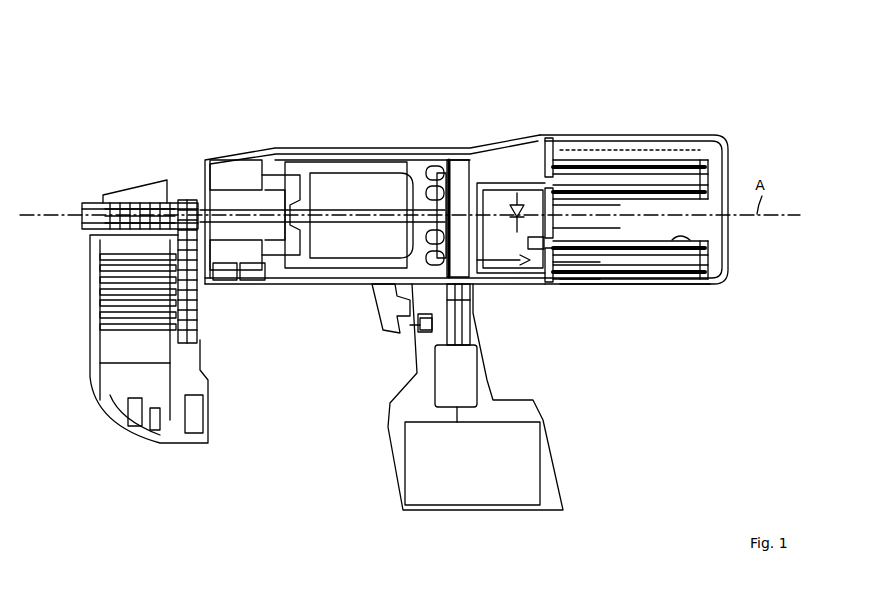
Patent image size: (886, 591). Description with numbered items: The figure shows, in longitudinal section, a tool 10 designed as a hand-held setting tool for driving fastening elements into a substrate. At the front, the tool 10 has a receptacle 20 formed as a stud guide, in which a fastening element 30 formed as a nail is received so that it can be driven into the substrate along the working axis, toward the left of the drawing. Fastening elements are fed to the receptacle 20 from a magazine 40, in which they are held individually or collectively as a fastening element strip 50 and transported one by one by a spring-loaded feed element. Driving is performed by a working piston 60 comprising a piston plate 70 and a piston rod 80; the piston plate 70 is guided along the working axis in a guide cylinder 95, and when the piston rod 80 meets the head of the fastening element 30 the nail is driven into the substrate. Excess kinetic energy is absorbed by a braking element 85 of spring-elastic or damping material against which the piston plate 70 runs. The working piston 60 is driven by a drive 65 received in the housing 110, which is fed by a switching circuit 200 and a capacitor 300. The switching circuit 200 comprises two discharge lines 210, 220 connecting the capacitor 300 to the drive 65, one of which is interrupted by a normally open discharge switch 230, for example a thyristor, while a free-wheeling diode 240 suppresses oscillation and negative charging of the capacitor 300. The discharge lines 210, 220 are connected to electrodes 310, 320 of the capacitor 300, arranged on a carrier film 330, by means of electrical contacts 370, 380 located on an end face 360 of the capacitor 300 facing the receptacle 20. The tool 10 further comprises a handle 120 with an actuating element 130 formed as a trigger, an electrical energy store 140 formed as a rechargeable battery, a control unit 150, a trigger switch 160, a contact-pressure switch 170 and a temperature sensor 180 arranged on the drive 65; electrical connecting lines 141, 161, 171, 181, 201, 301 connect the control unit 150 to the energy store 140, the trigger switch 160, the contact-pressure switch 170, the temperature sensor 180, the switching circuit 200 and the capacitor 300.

The tool 10 is at (94, 61).
The receptacle 20 is at (86, 160).
The fastening element 30 is at (128, 160).
The magazine 40 is at (140, 347).
The fastening element strip 50 is at (185, 333).
The working piston 60 is at (375, 74).
The drive 65 is at (455, 200).
The piston plate 70 is at (420, 195).
The piston rod 80 is at (350, 215).
The braking element 85 is at (280, 190).
The guide cylinder 95 is at (314, 160).
The housing 110 is at (710, 135).
The handle 120 is at (427, 367).
The actuating element 130 is at (383, 300).
The electrical energy store 140 is at (428, 473).
The electrical connecting line 141 is at (457, 413).
The control unit 150 is at (450, 373).
The trigger switch 160 is at (420, 323).
The electrical connecting line 161 is at (443, 333).
The contact-pressure switch 170 is at (223, 283).
The electrical connecting line 171 is at (247, 284).
The temperature sensor 180 is at (480, 287).
The electrical connecting line 181 is at (460, 307).
The switching circuit 200 is at (509, 167).
The electrical connecting line 201 is at (482, 290).
The discharge line 210 is at (600, 266).
The discharge line 220 is at (520, 187).
The discharge switch 230 is at (505, 262).
The free-wheeling diode 240 is at (580, 231).
The capacitor 300 is at (663, 148).
The electrical connecting line 301 is at (585, 270).
The electrode 310 is at (703, 187).
The electrode 320 is at (555, 226).
The carrier film 330 is at (705, 186).
The end face 360 is at (545, 175).
The electrical contact 370 is at (612, 140).
The electrical contact 380 is at (695, 283).